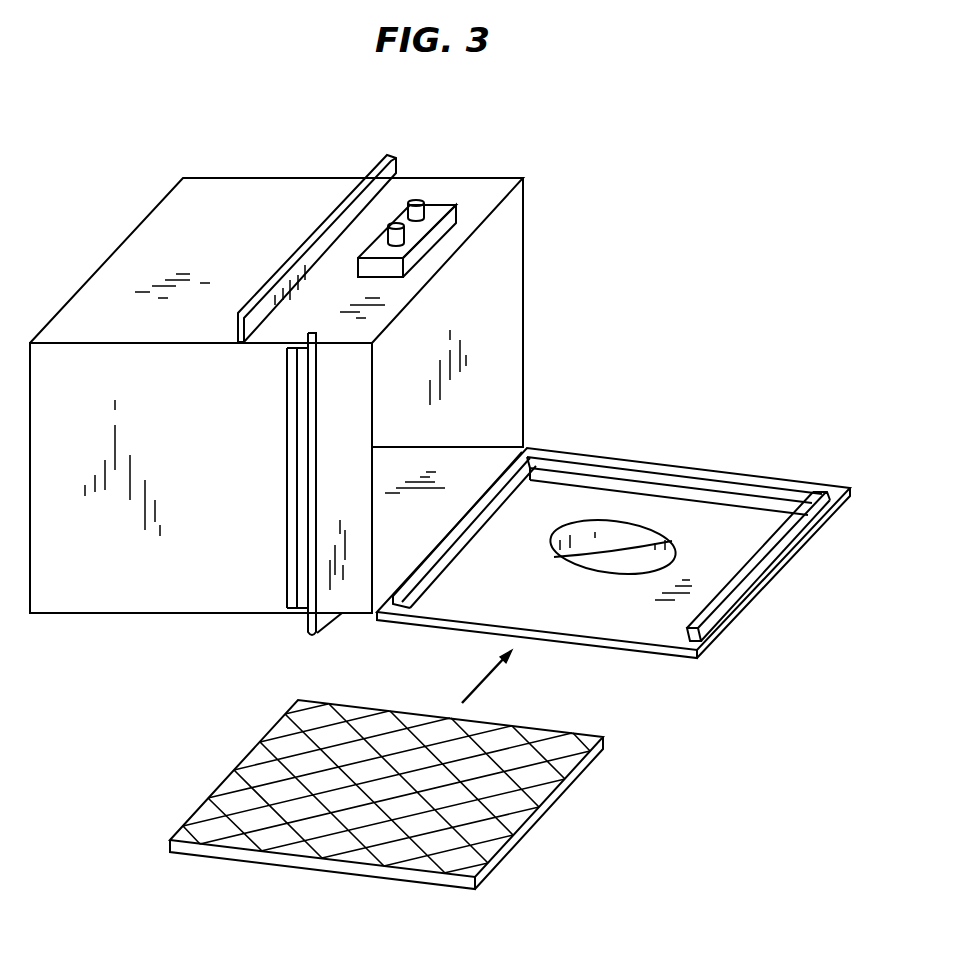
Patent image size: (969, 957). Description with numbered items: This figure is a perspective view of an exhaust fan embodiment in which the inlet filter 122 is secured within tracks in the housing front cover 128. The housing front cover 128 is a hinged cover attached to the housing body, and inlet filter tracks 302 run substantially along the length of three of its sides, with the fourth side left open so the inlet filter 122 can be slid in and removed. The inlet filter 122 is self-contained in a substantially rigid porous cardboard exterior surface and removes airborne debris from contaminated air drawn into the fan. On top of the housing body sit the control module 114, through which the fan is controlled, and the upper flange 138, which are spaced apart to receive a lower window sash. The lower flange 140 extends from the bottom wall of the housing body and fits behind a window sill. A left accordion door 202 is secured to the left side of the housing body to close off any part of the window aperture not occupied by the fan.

The control module 114 is at (455, 207).
The upper flange 138 is at (273, 278).
The left accordion door 202 is at (286, 432).
The lower flange 140 is at (310, 631).
The housing front cover 128 is at (727, 627).
The inlet filter tracks 302 is at (807, 520).
The inlet filter 122 is at (527, 803).